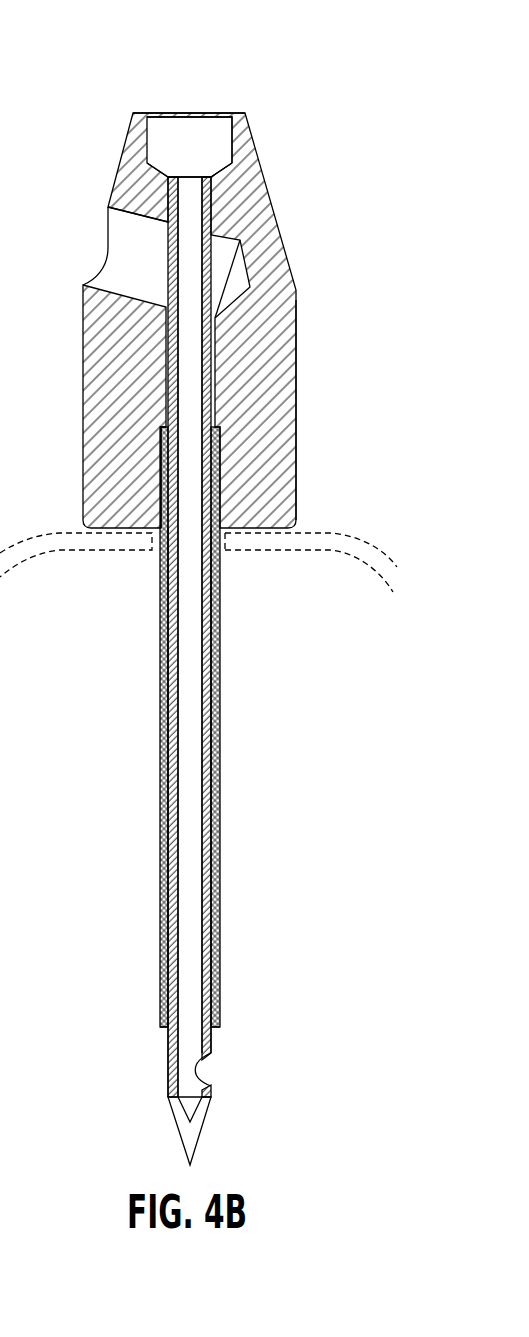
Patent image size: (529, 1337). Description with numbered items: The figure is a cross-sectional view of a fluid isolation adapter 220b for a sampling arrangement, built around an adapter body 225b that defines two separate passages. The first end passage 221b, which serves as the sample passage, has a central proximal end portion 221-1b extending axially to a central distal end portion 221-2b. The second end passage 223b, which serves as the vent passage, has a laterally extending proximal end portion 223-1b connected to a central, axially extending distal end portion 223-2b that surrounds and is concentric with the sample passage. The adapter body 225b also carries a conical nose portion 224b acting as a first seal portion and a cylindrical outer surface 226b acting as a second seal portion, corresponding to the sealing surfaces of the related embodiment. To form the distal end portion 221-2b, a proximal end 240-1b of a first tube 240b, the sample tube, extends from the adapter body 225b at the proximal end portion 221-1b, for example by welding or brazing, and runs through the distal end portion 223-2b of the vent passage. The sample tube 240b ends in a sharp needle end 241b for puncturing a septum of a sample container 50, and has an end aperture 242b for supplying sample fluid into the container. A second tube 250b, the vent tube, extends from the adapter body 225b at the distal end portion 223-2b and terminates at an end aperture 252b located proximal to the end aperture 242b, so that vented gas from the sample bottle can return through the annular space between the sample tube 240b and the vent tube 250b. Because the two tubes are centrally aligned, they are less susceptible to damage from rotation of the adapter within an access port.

The fluid isolation adapter 220b is at (368, 86).
The central proximal end portion of first end passage 221-1b is at (148, 148).
The conical nose portion 224b is at (258, 148).
The proximal end of first tube 240-1b is at (228, 189).
The laterally extending proximal end portion of second end passage 223-1b is at (110, 292).
The first end passage 221b is at (178, 342).
The adapter body 225b is at (268, 367).
The second end passage 223b is at (167, 372).
The first tube 240b is at (208, 399).
The cylindrical outer surface 226b is at (322, 432).
The central axially extending distal end portion of second end passage 223-2b is at (170, 487).
The sample container 50 is at (334, 533).
The central distal end portion of first end passage 221-2b is at (180, 518).
The second tube 250b is at (134, 770).
The end aperture of second tube 252b is at (146, 1044).
The end aperture of first tube 242b is at (220, 1079).
The sharp needle end 241b is at (198, 1133).